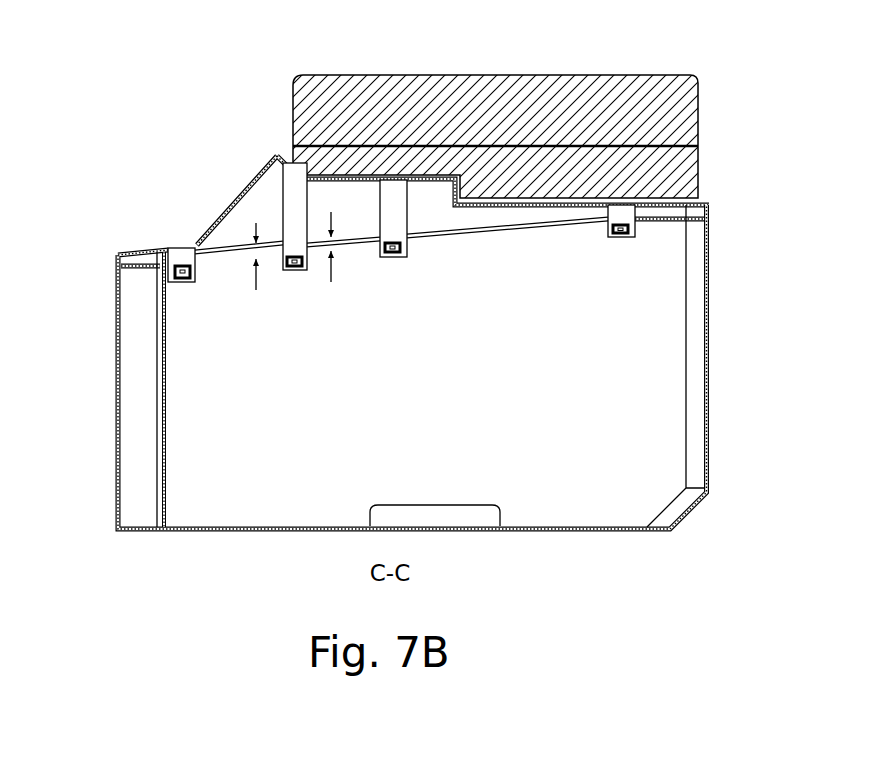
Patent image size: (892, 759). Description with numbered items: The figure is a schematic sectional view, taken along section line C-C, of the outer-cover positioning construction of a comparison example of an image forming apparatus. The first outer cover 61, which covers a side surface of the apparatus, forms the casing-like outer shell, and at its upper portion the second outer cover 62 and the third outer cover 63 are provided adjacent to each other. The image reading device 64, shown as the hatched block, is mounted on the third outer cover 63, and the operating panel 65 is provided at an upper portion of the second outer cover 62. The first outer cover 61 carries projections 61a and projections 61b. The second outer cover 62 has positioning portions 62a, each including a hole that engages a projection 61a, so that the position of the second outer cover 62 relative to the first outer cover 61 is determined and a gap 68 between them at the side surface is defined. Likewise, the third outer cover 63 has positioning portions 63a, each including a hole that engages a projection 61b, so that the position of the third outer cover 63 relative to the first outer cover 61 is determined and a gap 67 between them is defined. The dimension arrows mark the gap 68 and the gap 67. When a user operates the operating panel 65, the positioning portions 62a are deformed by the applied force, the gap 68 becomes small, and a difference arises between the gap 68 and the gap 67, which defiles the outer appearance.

The first outer cover 61 is at (657, 367).
The projection 61a is at (182, 282).
The projection 61b is at (392, 255).
The second outer cover 62 is at (254, 192).
The positioning portion 62a is at (178, 253).
The third outer cover 63 is at (292, 222).
The positioning portion 63a is at (343, 188).
The image reading device 64 is at (537, 145).
The operating panel 65 is at (260, 198).
The gap 67 is at (331, 282).
The gap 68 is at (256, 290).